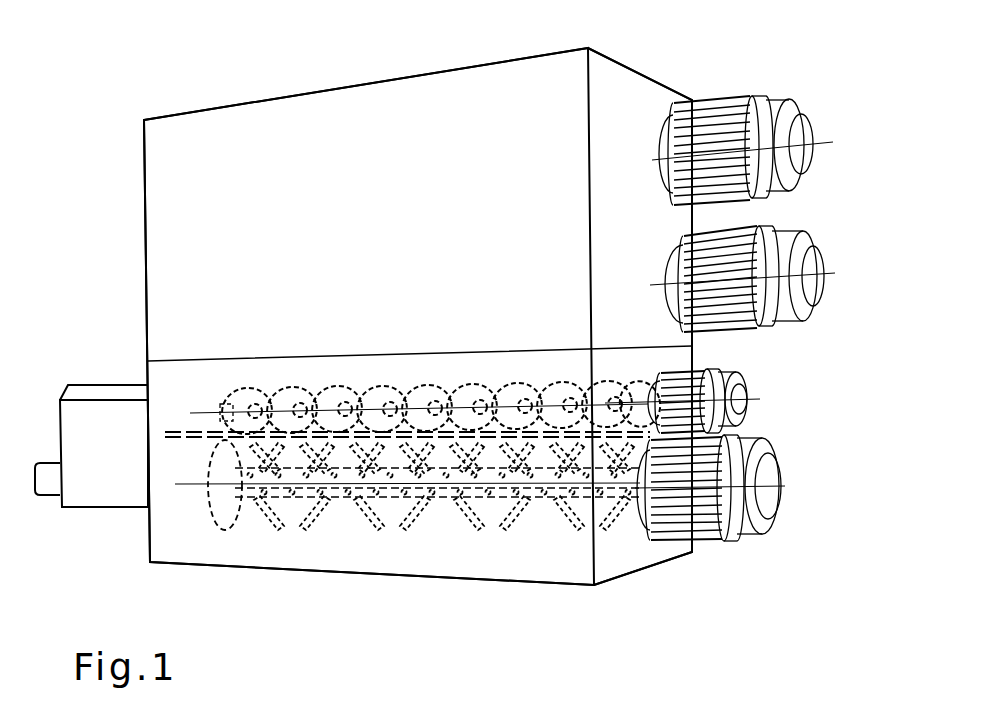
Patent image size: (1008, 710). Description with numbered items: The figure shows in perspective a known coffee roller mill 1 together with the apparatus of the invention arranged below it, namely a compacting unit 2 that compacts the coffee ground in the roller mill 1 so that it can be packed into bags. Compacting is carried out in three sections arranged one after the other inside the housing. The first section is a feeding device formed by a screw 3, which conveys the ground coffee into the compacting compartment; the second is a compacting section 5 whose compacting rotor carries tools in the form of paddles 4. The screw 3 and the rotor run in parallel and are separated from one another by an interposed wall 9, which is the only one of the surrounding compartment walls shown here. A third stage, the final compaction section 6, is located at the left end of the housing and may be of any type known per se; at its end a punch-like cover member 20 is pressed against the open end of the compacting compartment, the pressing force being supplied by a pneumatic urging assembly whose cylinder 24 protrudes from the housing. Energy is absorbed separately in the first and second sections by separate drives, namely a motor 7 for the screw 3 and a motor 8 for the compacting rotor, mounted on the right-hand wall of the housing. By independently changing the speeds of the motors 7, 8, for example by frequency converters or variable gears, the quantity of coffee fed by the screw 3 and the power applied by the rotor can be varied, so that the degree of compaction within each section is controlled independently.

The coffee roller mill 1 is at (678, 56).
The compacting unit 2 is at (105, 327).
The feeding device or screw 3 is at (245, 403).
The paddles 4 is at (325, 527).
The compacting section 5 is at (424, 512).
The final compaction section 6 is at (104, 469).
The motor 7 is at (737, 373).
The motor 8 is at (777, 461).
The interposed wall 9 is at (440, 426).
The cover member 20 is at (231, 537).
The cylinder 24 is at (52, 500).